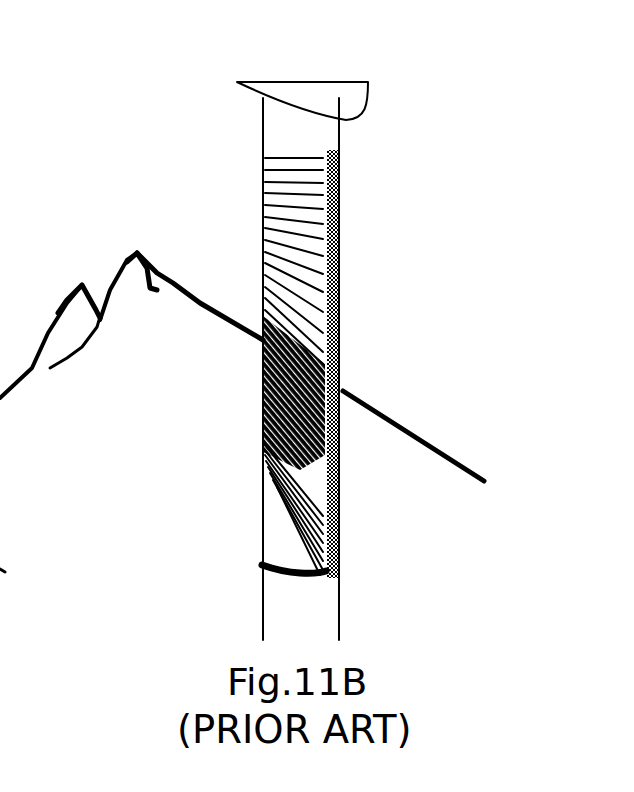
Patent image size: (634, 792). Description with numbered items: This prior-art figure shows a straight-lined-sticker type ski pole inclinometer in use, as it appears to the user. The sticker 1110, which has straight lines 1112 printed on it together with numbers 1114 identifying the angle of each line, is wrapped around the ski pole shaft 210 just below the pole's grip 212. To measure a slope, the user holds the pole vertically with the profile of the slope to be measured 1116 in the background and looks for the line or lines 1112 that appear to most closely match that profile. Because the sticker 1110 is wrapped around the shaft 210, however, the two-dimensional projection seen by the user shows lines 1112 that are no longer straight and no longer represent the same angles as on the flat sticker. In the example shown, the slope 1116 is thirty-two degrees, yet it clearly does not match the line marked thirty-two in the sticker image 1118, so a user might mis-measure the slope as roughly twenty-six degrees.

The grip 212 is at (363, 122).
The ski pole shaft 210 is at (328, 615).
The sticker 1110 is at (262, 528).
The straight lines 1112 is at (262, 212).
The numbers 1114 is at (340, 188).
The profile of the slope to be measured 1116 is at (231, 330).
The line marked "32" in the sticker image 1118 is at (340, 343).